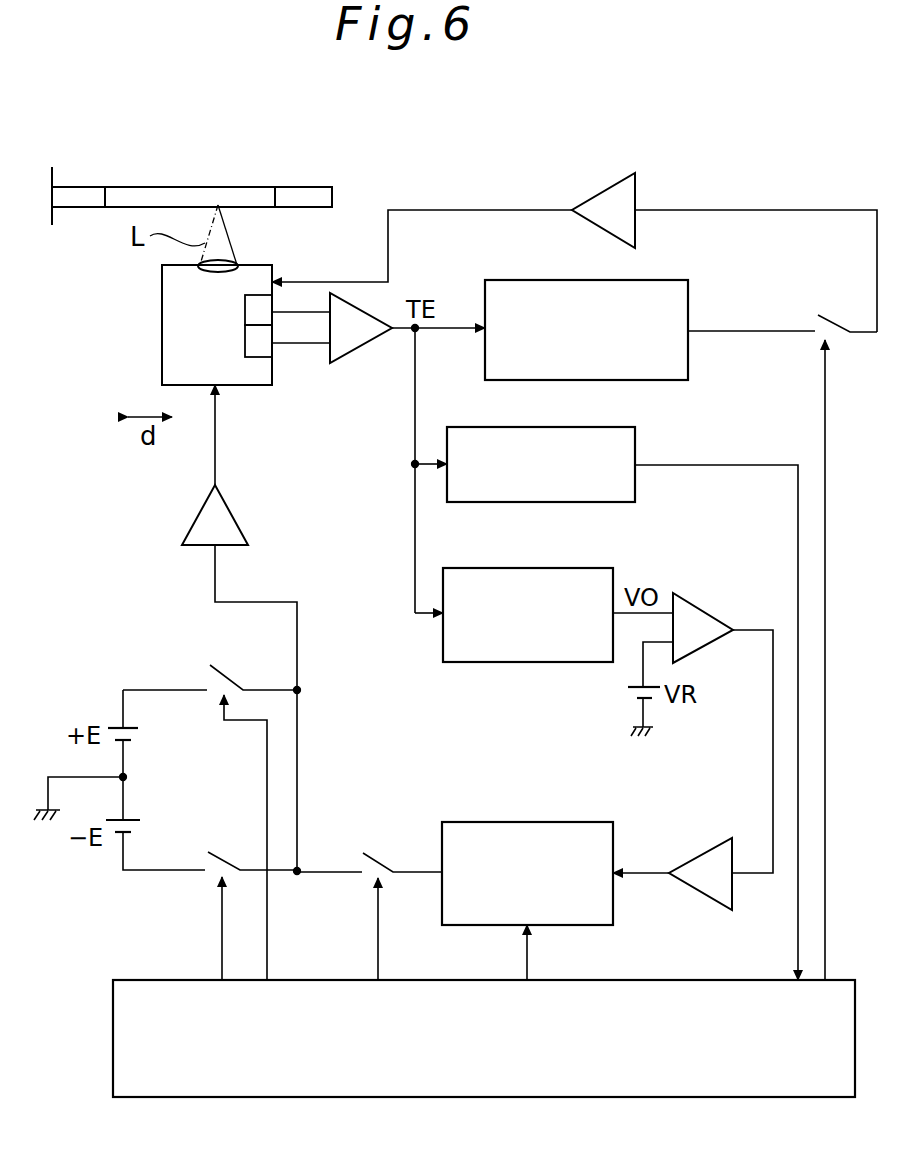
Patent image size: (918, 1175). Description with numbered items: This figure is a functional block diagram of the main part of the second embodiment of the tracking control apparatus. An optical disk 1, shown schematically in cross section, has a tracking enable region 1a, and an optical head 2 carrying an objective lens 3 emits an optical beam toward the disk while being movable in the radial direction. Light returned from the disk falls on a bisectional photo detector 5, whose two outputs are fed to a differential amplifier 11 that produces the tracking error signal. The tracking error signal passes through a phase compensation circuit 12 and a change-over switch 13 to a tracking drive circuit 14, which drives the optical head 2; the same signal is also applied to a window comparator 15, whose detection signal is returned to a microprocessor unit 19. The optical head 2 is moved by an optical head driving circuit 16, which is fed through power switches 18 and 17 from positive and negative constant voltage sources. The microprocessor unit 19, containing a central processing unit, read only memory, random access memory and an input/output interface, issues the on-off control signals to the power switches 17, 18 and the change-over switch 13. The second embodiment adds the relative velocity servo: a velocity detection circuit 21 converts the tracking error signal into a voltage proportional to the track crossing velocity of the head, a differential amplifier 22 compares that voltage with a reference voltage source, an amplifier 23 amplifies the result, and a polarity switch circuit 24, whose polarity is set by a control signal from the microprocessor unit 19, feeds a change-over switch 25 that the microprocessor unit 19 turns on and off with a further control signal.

The optical disk 1 is at (305, 192).
The tracking enable region 1a is at (202, 190).
The optical head 2 is at (162, 362).
The objective lens 3 is at (228, 265).
The bisectional photo detector 5 is at (258, 358).
The differential amplifier 11 is at (360, 311).
The phase compensation circuit 12 is at (680, 300).
The change-over switch 13 is at (832, 322).
The tracking drive circuit 14 is at (636, 188).
The window comparator 15 is at (630, 445).
The optical head driving circuit 16 is at (228, 517).
The power switch 17 is at (225, 855).
The power switch 18 is at (228, 675).
The microprocessor unit (MPU) 19 is at (150, 980).
The velocity detection circuit 21 is at (600, 577).
The differential amplifier 22 is at (700, 615).
The amplifier 23 is at (700, 850).
The polarity switch circuit (INV) 24 is at (527, 818).
The change-over switch 25 is at (393, 838).